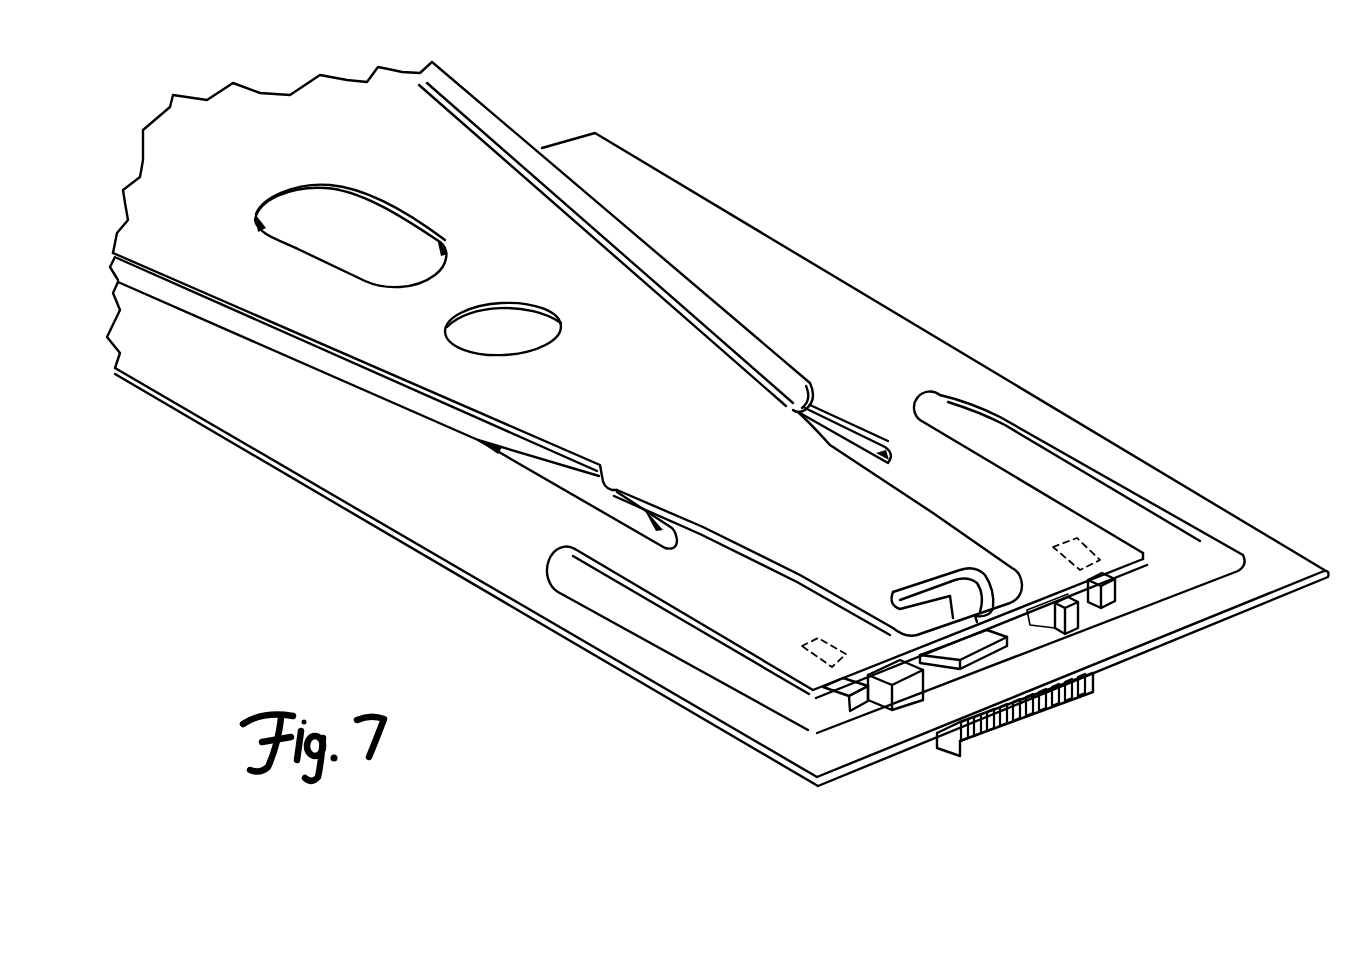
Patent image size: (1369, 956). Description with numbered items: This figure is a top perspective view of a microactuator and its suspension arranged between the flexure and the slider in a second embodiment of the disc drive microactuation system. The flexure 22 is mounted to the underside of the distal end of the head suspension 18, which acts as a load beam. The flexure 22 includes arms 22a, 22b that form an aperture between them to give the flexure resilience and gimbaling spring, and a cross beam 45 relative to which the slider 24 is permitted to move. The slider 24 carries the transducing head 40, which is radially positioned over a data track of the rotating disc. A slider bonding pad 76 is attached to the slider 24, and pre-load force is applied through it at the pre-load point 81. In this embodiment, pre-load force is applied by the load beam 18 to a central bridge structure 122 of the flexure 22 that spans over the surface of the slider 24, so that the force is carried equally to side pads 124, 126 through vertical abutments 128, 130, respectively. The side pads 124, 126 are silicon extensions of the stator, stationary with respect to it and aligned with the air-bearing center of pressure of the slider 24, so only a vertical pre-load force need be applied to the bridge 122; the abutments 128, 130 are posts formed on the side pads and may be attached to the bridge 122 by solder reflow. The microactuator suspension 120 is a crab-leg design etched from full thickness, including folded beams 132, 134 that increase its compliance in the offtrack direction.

The head suspension 18 is at (517, 128).
The flexure 22 is at (853, 287).
The flexure arm 22a is at (872, 413).
The flexure arm 22b is at (605, 546).
The slider 24 is at (1030, 713).
The transducing head 40 is at (1080, 690).
The cross beam 45 is at (1152, 643).
The slider bonding pad 76 is at (980, 652).
The pre-load point 81 is at (958, 596).
The microactuator suspension 120 is at (822, 700).
The central bridge structure 122 is at (1013, 476).
The side pad 124 is at (833, 702).
The side pad 126 is at (1113, 587).
The vertical abutment 128 is at (815, 642).
The vertical abutment 130 is at (1060, 537).
The folded beam 132 is at (903, 677).
The folded beam 134 is at (1066, 626).